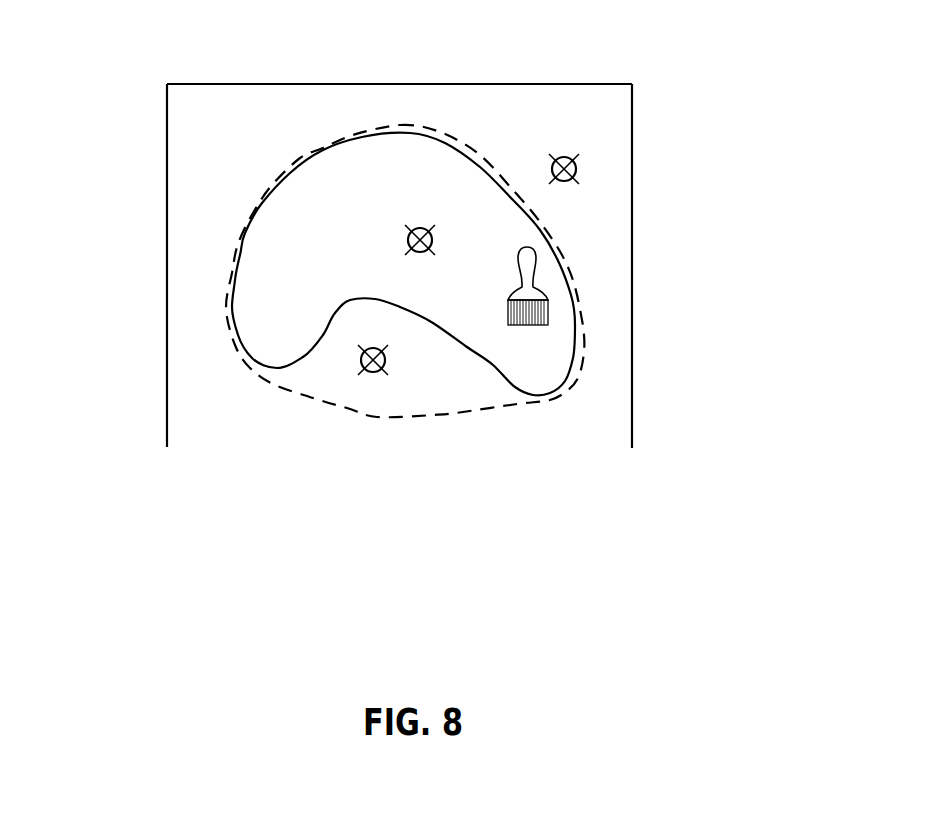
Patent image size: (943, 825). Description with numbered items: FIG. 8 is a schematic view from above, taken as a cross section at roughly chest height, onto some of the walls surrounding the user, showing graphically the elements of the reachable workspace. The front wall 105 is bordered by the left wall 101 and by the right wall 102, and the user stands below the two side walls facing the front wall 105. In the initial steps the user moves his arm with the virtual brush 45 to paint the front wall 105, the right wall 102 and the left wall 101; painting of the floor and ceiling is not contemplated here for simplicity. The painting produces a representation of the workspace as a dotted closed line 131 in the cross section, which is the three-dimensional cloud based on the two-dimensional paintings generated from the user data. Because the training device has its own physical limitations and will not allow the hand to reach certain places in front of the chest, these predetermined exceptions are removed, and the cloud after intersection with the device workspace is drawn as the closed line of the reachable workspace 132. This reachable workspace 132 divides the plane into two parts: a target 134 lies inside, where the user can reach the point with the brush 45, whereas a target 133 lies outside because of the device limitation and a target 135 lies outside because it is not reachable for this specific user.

The front wall 105 is at (436, 78).
The left wall 101 is at (162, 276).
The right wall 102 is at (637, 370).
The reachable workspace 132 is at (492, 360).
The closed line 131 is at (399, 420).
The target not in the reachable part of the workspace through device limitation 133 is at (393, 361).
The target in the reachable part of the workspace 134 is at (404, 241).
The target not in the reachable part of the workspace for a specific user 135 is at (582, 163).
The virtual brush 45 is at (533, 278).